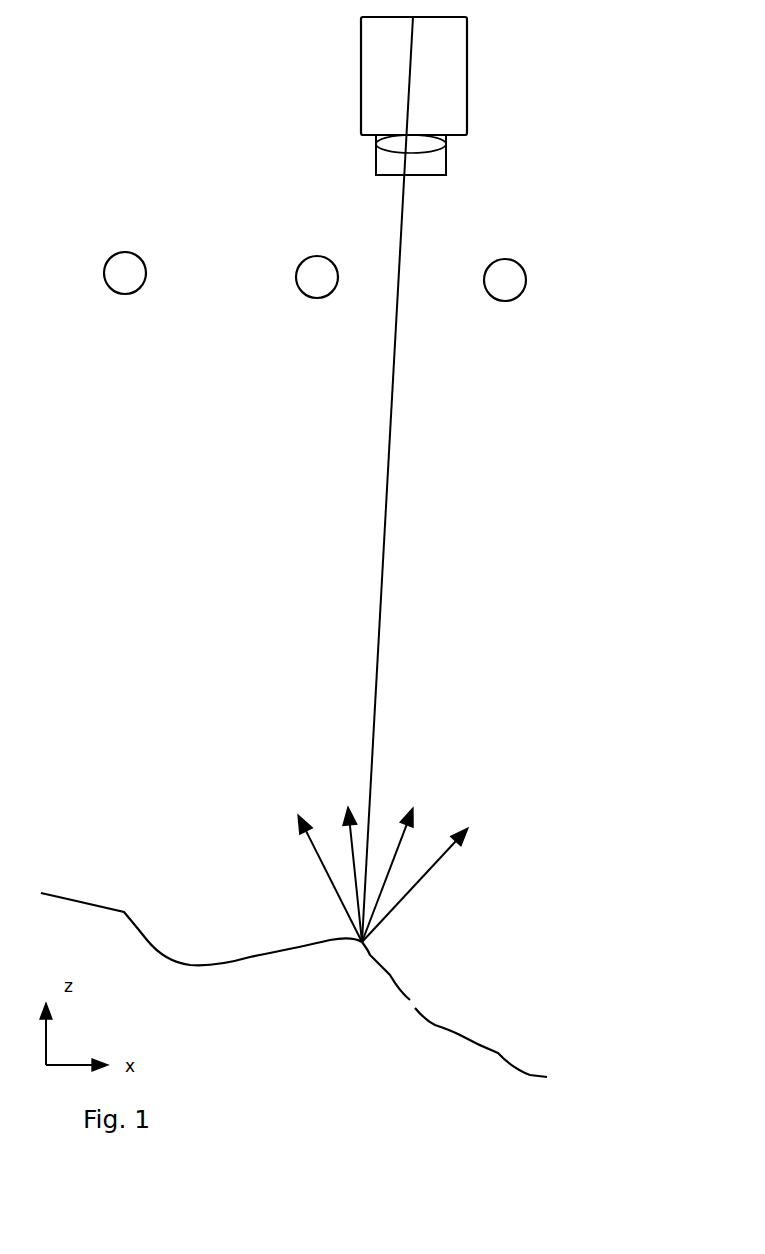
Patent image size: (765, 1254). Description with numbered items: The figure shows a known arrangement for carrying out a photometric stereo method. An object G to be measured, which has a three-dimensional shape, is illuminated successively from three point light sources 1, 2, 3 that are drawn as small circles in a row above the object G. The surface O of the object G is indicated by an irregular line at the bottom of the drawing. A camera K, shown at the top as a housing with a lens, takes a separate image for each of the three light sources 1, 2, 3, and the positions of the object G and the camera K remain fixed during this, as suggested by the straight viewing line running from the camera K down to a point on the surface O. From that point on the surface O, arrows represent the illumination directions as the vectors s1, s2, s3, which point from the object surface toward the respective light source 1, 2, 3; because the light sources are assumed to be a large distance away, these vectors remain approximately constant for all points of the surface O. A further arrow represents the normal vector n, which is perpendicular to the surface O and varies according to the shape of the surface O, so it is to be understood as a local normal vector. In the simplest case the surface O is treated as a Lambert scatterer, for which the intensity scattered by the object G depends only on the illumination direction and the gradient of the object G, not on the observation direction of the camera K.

The camera K is at (470, 88).
The point light source 1 is at (143, 259).
The point light source 2 is at (333, 262).
The point light source 3 is at (522, 266).
The object G is at (73, 892).
The surface O is at (548, 1023).
The illumination direction vector s1 is at (312, 862).
The illumination direction vector s2 is at (352, 851).
The illumination direction vector s3 is at (394, 851).
The normal vector n is at (415, 885).